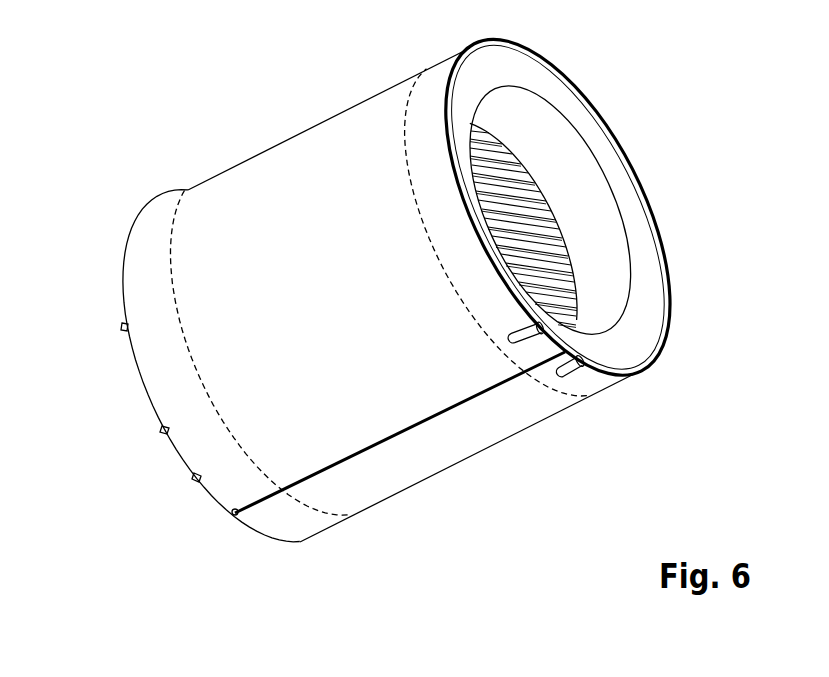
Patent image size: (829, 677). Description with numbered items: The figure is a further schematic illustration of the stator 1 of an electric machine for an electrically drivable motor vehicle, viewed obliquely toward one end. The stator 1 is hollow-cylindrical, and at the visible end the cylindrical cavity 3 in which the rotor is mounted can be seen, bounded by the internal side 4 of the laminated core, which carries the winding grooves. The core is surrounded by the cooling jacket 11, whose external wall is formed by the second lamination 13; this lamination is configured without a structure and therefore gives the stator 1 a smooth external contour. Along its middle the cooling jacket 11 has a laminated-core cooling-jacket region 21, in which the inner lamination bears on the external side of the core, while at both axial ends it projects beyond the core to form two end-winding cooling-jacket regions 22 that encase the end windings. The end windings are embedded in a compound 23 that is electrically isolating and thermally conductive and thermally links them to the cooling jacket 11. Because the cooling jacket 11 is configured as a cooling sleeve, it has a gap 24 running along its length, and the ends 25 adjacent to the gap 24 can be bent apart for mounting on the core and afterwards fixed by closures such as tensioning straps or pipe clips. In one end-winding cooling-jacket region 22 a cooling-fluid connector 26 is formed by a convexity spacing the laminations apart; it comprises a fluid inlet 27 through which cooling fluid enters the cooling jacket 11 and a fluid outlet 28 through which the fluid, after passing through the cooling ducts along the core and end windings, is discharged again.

The stator 1 is at (677, 93).
The cylindrical cavity 3 is at (544, 228).
The internal side 4 is at (521, 171).
The cooling jacket 11 is at (293, 138).
The second lamination 13 is at (353, 115).
The laminated-core cooling-jacket region 21 is at (249, 168).
The end-winding cooling-jacket regions 22 is at (436, 72).
The compound 23 is at (648, 283).
The gap 24 is at (239, 516).
The ends 25 is at (319, 463).
The cooling-fluid connector 26 is at (567, 395).
The fluid inlet 27 is at (535, 360).
The fluid outlet 28 is at (576, 378).